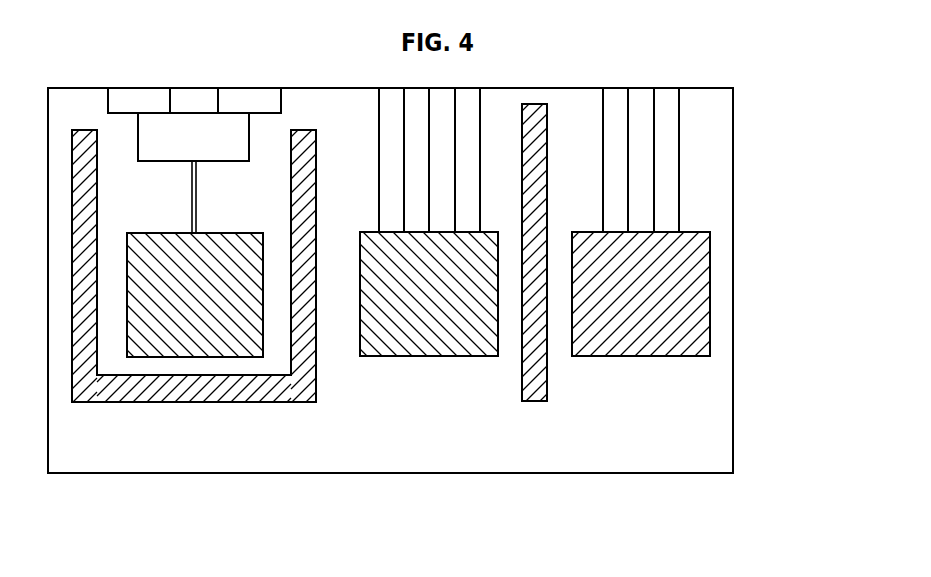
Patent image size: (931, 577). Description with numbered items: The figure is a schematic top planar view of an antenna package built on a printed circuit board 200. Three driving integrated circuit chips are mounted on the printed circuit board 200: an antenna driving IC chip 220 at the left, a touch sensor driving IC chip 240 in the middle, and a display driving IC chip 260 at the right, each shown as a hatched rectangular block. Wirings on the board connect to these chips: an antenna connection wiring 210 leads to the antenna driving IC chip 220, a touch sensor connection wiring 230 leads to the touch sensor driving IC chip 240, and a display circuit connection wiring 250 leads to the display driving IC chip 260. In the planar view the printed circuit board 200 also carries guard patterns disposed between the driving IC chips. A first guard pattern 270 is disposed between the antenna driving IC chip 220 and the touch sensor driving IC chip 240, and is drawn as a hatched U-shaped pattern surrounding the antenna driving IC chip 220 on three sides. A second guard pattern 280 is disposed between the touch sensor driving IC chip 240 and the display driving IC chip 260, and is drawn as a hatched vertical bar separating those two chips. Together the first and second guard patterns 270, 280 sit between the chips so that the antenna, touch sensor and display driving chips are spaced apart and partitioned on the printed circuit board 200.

The printed circuit board 200 is at (723, 426).
The antenna connection wiring 210 is at (167, 162).
The antenna driving integrated circuit chip 220 is at (199, 342).
The touch sensor connection wiring 230 is at (480, 142).
The touch sensor driving IC chip 240 is at (433, 340).
The display circuit connection wiring 250 is at (679, 197).
The display driving IC chip 260 is at (645, 340).
The first guard pattern 270 is at (279, 390).
The second guard pattern 280 is at (537, 387).